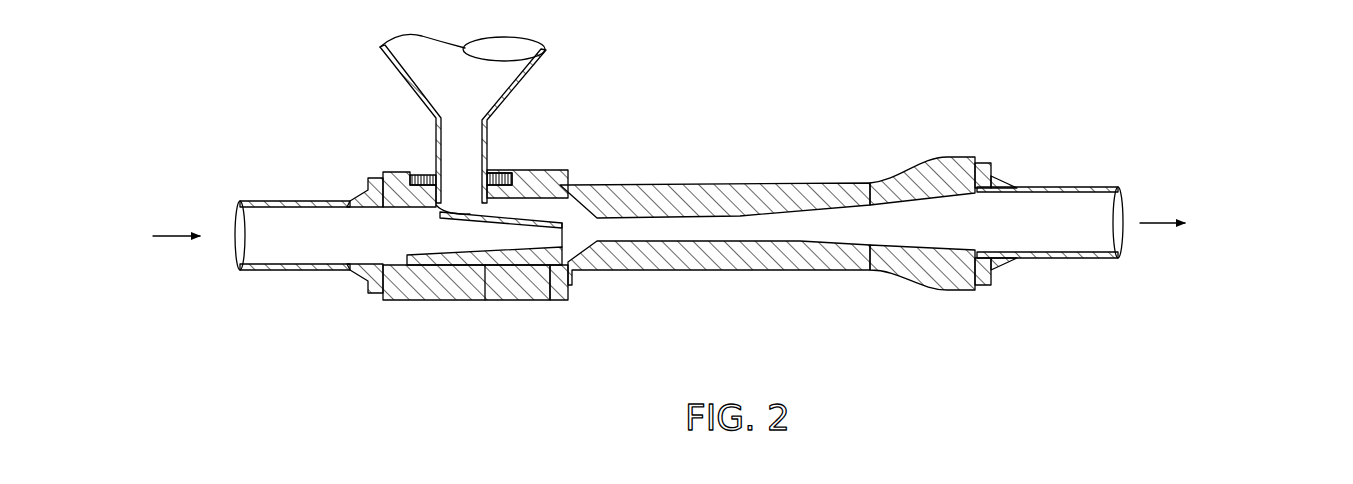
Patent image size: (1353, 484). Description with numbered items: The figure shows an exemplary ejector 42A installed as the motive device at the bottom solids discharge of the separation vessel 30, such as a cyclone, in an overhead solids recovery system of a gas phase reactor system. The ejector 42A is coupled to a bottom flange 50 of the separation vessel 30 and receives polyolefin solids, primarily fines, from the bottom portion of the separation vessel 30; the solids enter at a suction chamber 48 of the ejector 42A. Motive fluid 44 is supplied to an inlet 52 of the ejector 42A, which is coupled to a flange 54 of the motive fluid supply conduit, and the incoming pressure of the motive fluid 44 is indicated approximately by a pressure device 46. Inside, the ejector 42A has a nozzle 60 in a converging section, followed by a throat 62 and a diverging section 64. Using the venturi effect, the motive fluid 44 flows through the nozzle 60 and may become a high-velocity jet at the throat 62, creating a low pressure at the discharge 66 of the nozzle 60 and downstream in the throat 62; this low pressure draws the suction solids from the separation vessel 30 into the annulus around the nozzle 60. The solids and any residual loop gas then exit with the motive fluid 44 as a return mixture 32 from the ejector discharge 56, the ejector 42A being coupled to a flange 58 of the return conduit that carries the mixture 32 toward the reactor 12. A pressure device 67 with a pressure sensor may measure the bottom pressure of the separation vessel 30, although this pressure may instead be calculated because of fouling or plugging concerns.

The ejector 42A is at (867, 58).
The separation vessel 30 is at (392, 74).
The pressure device 46 is at (290, 201).
The suction chamber 48 is at (463, 183).
The pressure device 67 is at (488, 138).
The bottom flange 50 is at (503, 172).
The throat 62 is at (713, 230).
The diverging section 64 is at (877, 215).
The motive fluid 44 is at (165, 237).
The flange 54 is at (390, 238).
The inlet 52 is at (413, 266).
The nozzle 60 is at (437, 262).
The discharge 66 is at (552, 263).
The ejector discharge 56 is at (950, 224).
The flange 58 is at (993, 274).
The return mixture 32 is at (1157, 226).
The reactor 12 is at (1262, 226).